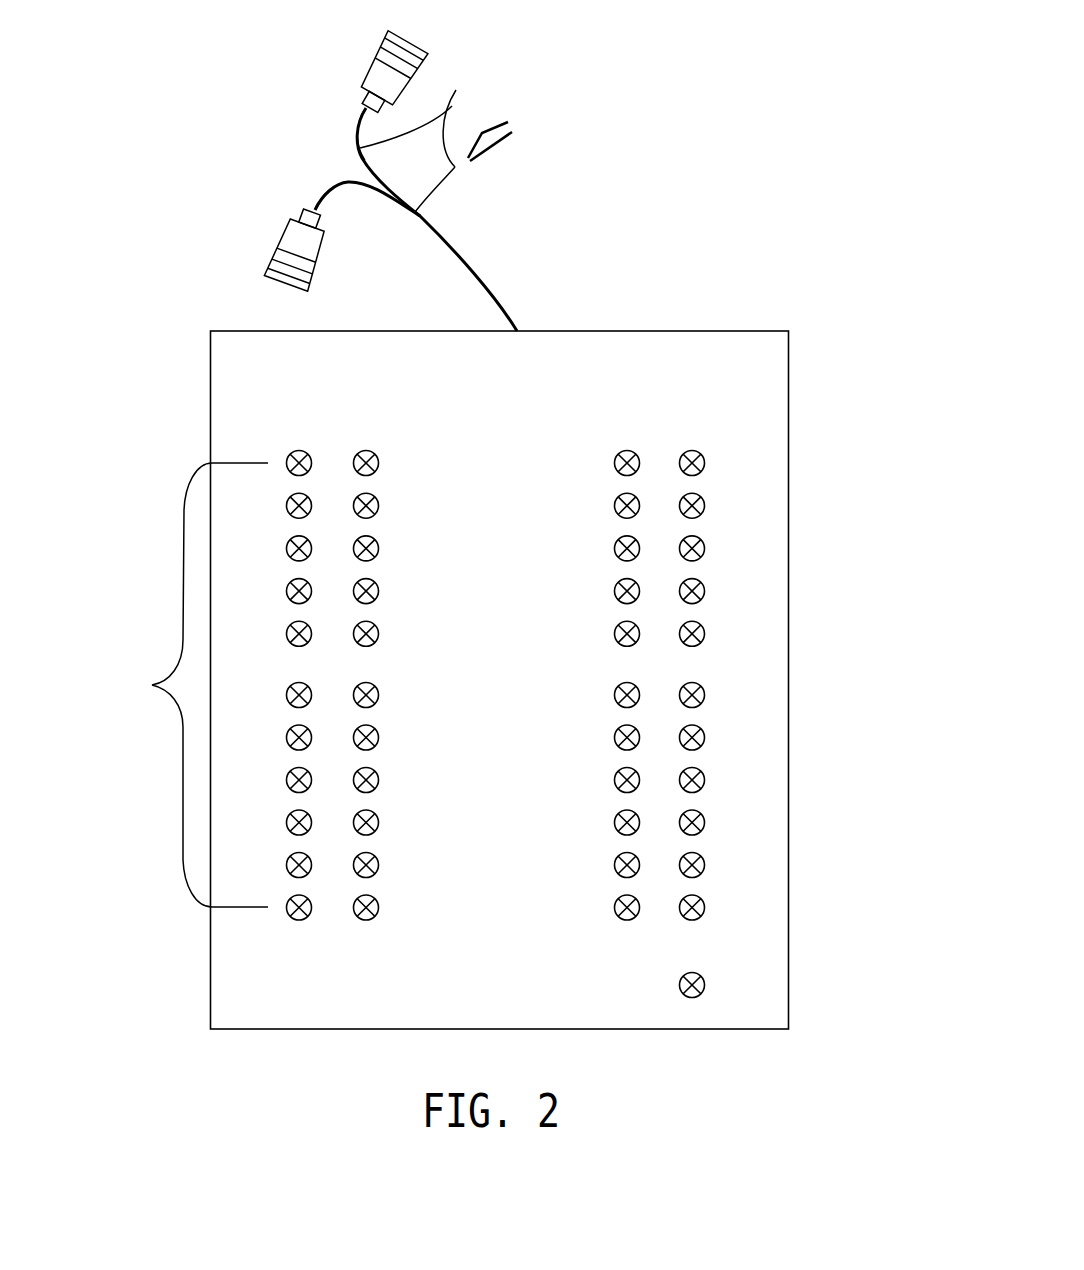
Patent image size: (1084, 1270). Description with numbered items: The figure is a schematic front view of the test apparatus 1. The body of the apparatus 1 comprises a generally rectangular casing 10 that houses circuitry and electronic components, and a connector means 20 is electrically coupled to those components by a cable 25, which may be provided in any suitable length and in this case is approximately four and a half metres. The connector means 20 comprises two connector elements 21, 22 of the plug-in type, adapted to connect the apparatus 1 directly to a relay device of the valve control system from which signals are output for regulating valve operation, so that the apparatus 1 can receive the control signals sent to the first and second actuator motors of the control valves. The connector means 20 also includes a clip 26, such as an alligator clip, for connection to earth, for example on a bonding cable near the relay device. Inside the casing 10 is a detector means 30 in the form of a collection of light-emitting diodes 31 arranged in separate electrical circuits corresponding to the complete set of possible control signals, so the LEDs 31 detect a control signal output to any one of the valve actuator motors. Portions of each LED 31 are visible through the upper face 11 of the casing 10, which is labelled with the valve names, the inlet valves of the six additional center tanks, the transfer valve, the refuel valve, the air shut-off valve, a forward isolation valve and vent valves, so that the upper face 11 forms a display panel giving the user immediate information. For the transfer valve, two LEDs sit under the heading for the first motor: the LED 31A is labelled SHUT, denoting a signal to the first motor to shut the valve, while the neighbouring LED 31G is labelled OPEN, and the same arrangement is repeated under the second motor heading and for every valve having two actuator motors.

The test apparatus 1 is at (740, 103).
The casing 10 is at (800, 1011).
The upper face 11 is at (688, 368).
The connector means 20 is at (257, 103).
The connector element 21 is at (363, 70).
The connector element 22 is at (287, 228).
The cable 25 is at (485, 267).
The clip 26 is at (507, 142).
The detector means 30 is at (216, 658).
The light-emitting diodes 31 is at (704, 466).
The LED 31A is at (287, 456).
The transfer valve open indicator 31G is at (379, 457).